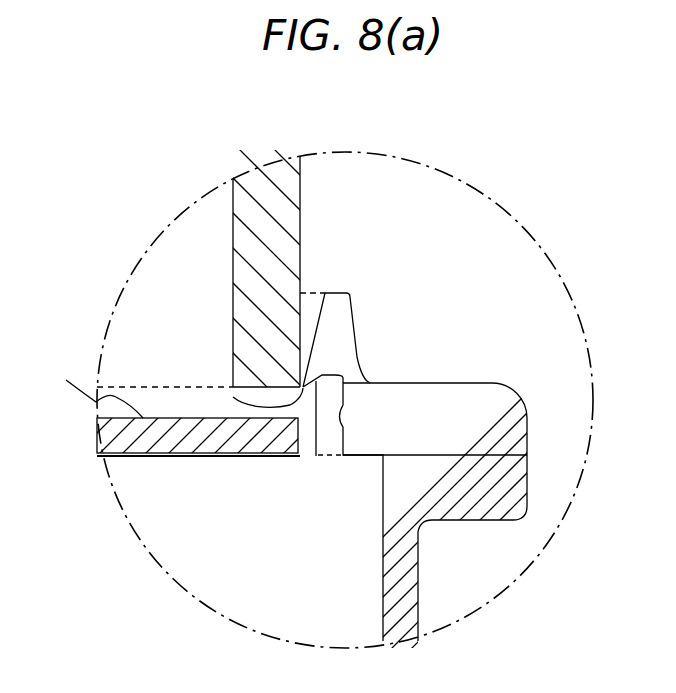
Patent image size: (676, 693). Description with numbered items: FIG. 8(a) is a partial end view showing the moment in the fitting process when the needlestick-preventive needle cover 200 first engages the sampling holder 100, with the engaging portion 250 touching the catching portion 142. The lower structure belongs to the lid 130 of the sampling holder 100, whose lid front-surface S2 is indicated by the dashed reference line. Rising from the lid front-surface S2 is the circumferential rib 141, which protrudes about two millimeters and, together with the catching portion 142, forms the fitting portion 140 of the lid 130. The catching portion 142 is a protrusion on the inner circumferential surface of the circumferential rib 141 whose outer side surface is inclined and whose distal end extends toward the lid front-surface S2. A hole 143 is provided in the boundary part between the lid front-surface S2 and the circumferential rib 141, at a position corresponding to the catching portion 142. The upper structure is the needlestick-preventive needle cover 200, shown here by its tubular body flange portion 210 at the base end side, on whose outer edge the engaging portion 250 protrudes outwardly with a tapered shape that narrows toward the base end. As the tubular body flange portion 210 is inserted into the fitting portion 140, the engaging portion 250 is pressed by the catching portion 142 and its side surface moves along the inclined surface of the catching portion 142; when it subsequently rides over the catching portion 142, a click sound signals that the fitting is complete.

The sampling holder 100 is at (357, 433).
The needlestick-preventive needle cover 200 is at (212, 292).
The tubular body flange portion 210 is at (300, 165).
The lid 130 is at (506, 410).
The fitting portion 140 is at (438, 433).
The circumferential rib 141 is at (358, 343).
The catching portion 142 is at (316, 458).
The hole 143 is at (325, 464).
The engaging portion 250 is at (233, 397).
The lid front-surface S2 is at (138, 385).